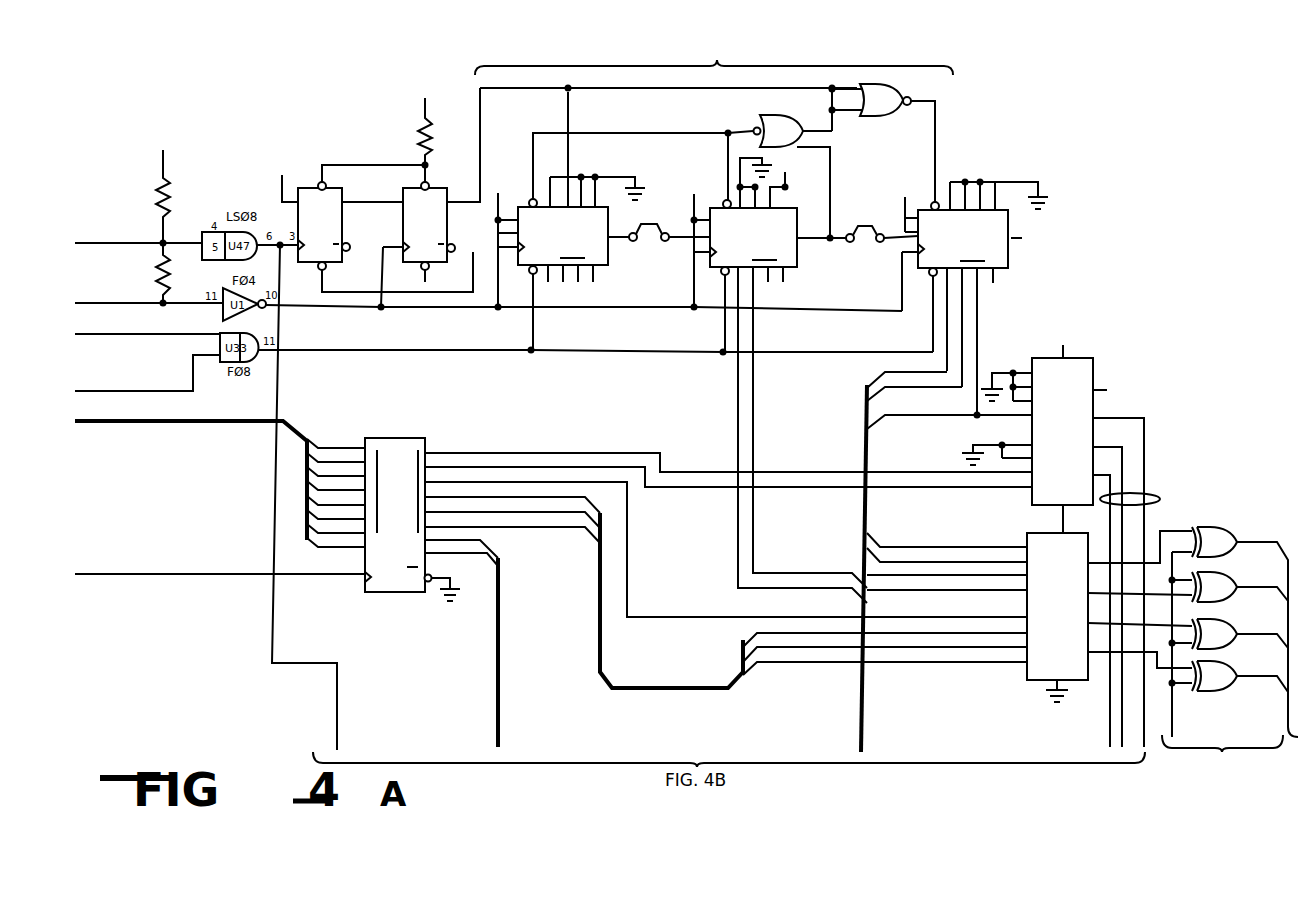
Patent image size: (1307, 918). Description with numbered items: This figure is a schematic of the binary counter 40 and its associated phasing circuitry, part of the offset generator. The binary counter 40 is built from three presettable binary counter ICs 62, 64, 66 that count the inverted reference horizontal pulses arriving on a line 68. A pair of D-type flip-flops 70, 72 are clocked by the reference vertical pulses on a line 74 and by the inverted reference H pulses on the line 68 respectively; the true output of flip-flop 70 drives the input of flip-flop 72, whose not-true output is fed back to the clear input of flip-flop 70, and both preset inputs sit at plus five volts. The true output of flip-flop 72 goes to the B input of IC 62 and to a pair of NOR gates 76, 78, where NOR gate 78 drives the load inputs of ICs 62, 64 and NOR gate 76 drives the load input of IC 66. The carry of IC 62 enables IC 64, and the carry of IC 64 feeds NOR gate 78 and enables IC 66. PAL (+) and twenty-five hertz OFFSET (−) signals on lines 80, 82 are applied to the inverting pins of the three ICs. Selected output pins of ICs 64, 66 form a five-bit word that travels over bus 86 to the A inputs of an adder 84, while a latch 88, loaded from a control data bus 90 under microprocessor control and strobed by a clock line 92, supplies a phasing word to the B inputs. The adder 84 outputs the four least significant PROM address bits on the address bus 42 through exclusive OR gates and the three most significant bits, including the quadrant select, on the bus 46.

The binary counter 40 is at (714, 61).
The address bus 42 is at (1280, 704).
The bus 46 is at (1157, 500).
The IC 62 is at (609, 262).
The IC 64 is at (799, 260).
The IC 66 is at (1008, 263).
The line 68 is at (182, 302).
The D-type flip-flop 70 is at (304, 184).
The D-type flip-flop 72 is at (407, 185).
The line 74 is at (178, 242).
The NOR gate 76 is at (888, 115).
The NOR gate 78 is at (763, 125).
The line 80 is at (140, 389).
The line 82 is at (140, 336).
The adder 84 is at (1040, 530).
The bus 86 is at (866, 415).
The latch 88 is at (392, 437).
The bus 90 is at (193, 419).
The CLK line 92 is at (155, 574).